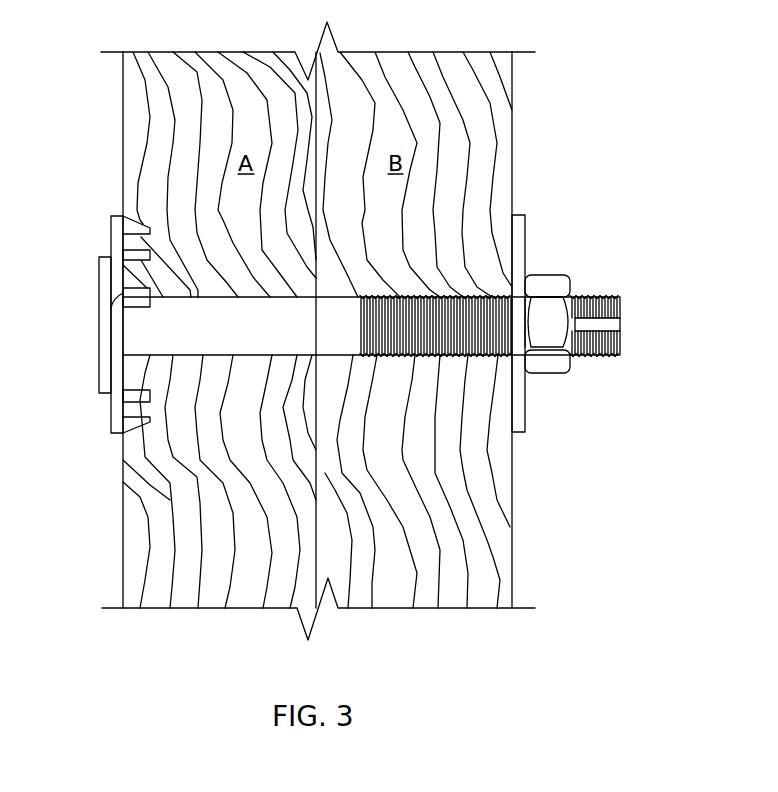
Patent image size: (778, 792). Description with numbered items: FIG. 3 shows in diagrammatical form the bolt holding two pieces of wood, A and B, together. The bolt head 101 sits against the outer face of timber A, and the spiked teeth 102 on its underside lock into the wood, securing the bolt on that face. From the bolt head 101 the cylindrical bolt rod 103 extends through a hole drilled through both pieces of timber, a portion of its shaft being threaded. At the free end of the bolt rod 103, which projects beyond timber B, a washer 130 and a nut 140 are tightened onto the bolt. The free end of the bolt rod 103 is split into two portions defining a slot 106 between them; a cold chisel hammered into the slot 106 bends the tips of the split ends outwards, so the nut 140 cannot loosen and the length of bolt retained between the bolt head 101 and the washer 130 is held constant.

The bolt head 101 is at (98, 365).
The teeth 102 is at (121, 430).
The bolt rod 103 is at (605, 295).
The slot 106 is at (617, 325).
The washer 130 is at (528, 222).
The nut 140 is at (546, 278).